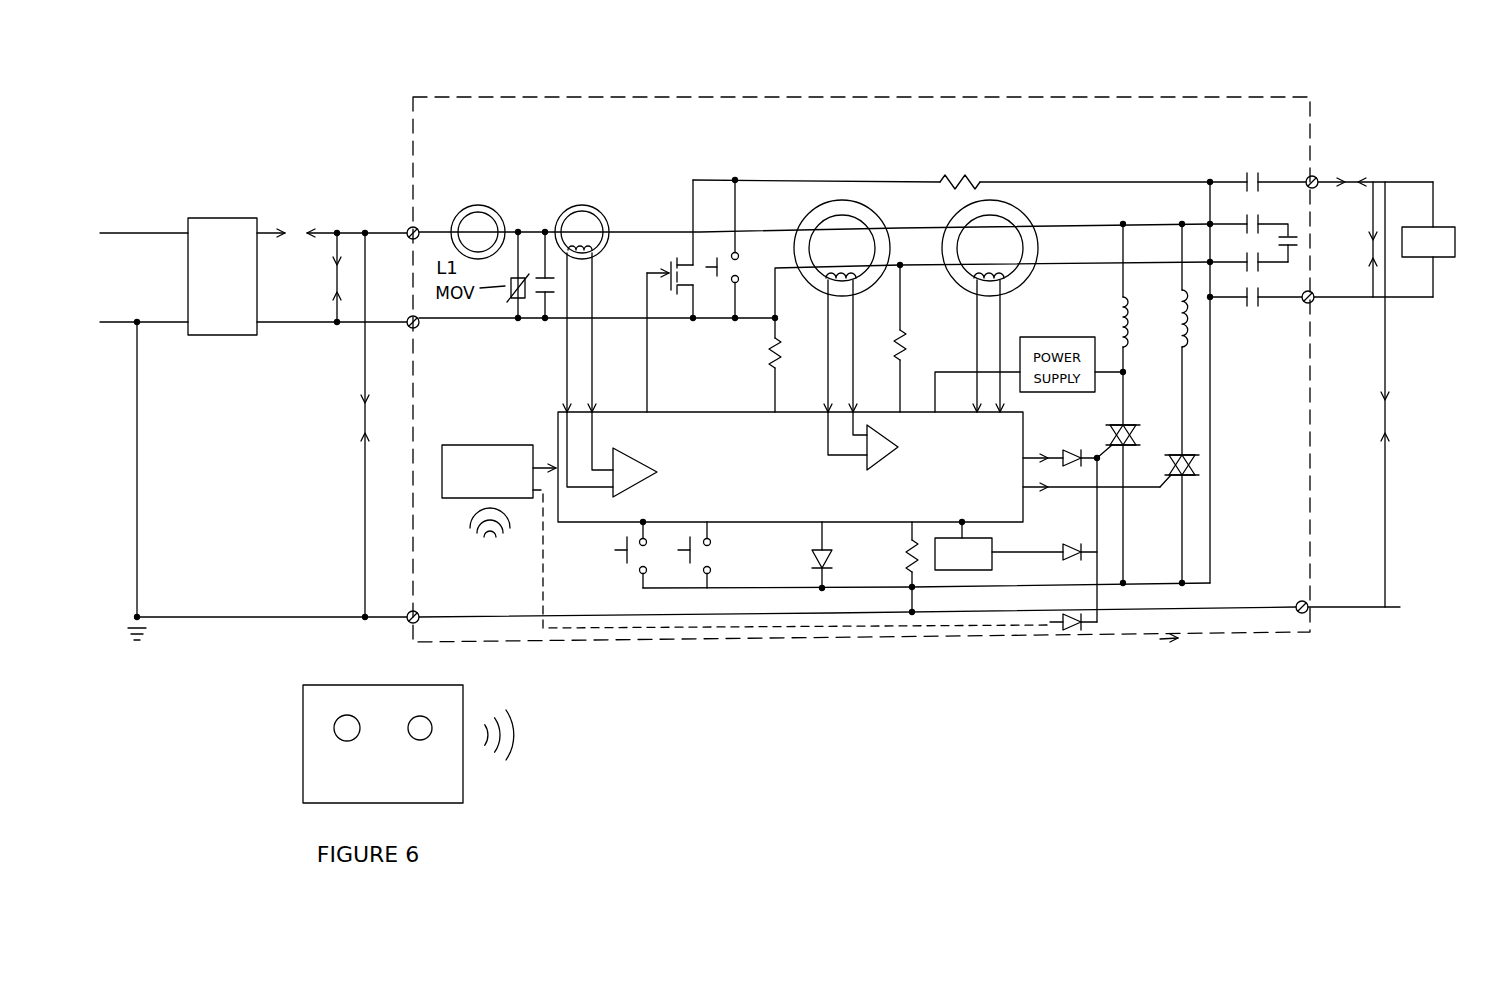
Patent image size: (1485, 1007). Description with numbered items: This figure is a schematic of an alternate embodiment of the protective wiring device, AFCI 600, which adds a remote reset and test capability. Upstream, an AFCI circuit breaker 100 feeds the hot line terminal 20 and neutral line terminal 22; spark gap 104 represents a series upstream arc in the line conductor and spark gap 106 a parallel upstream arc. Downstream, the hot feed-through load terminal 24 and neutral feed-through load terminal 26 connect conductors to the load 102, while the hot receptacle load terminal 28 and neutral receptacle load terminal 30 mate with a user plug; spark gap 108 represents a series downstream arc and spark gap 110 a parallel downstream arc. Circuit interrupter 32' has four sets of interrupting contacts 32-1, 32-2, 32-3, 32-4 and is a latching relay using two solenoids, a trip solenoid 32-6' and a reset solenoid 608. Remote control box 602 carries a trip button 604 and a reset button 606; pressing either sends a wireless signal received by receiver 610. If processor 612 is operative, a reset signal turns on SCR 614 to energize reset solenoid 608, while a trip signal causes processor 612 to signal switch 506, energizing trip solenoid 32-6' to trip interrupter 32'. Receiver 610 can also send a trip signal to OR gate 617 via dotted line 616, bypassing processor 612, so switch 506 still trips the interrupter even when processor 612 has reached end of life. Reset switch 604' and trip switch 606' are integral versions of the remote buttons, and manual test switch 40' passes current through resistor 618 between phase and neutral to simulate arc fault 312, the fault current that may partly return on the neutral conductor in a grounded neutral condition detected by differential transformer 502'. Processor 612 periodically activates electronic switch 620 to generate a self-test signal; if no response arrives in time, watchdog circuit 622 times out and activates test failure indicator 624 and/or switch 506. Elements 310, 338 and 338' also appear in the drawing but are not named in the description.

The AFCI device 600 is at (800, 92).
The AFCI circuit breaker 100 is at (232, 216).
The spark gap 104 is at (312, 220).
The spark gap 106 is at (328, 290).
The hot line terminal 20 is at (405, 224).
The neutral line terminal 22 is at (408, 333).
The return conductor 310 is at (352, 410).
The electronic switch 620 is at (674, 214).
The manual test switch 40' is at (739, 249).
The resistor 618 is at (942, 170).
The resistor 338 is at (748, 365).
The resistor 338' is at (930, 338).
The differential transformer 502' is at (1004, 275).
The trip solenoid 32-6' is at (1080, 324).
The reset solenoid 608 is at (1190, 333).
The circuit interrupter 32' is at (1221, 348).
The interrupting contacts 32-1 is at (1232, 172).
The interrupting contacts 32-2 is at (1232, 212).
The interrupting contacts 32-3 is at (1238, 250).
The interrupting contacts 32-4 is at (1232, 322).
The hot receptacle load terminal 28 is at (1292, 226).
The hot feed-through load terminal 24 is at (1304, 172).
The neutral feed-through load terminal 26 is at (1315, 305).
The spark gap 108 is at (1354, 170).
The neutral receptacle load terminal 30 is at (1308, 252).
The spark gap 110 is at (1352, 246).
The load 102 is at (1440, 212).
The fault current 312 is at (1375, 420).
The processor 612 is at (697, 405).
The receiver 610 is at (492, 440).
The dotted line 616 is at (535, 588).
The reset switch 604' is at (603, 555).
The trip switch 606' is at (679, 611).
The test failure indicator 624 is at (872, 544).
The watchdog circuit 622 is at (1016, 545).
The OR gate 617 is at (1082, 498).
The switch 506 is at (1108, 428).
The SCR 614 is at (1197, 462).
The remote control box 602 is at (361, 727).
The trip button 604 is at (325, 696).
The reset button 606 is at (394, 695).